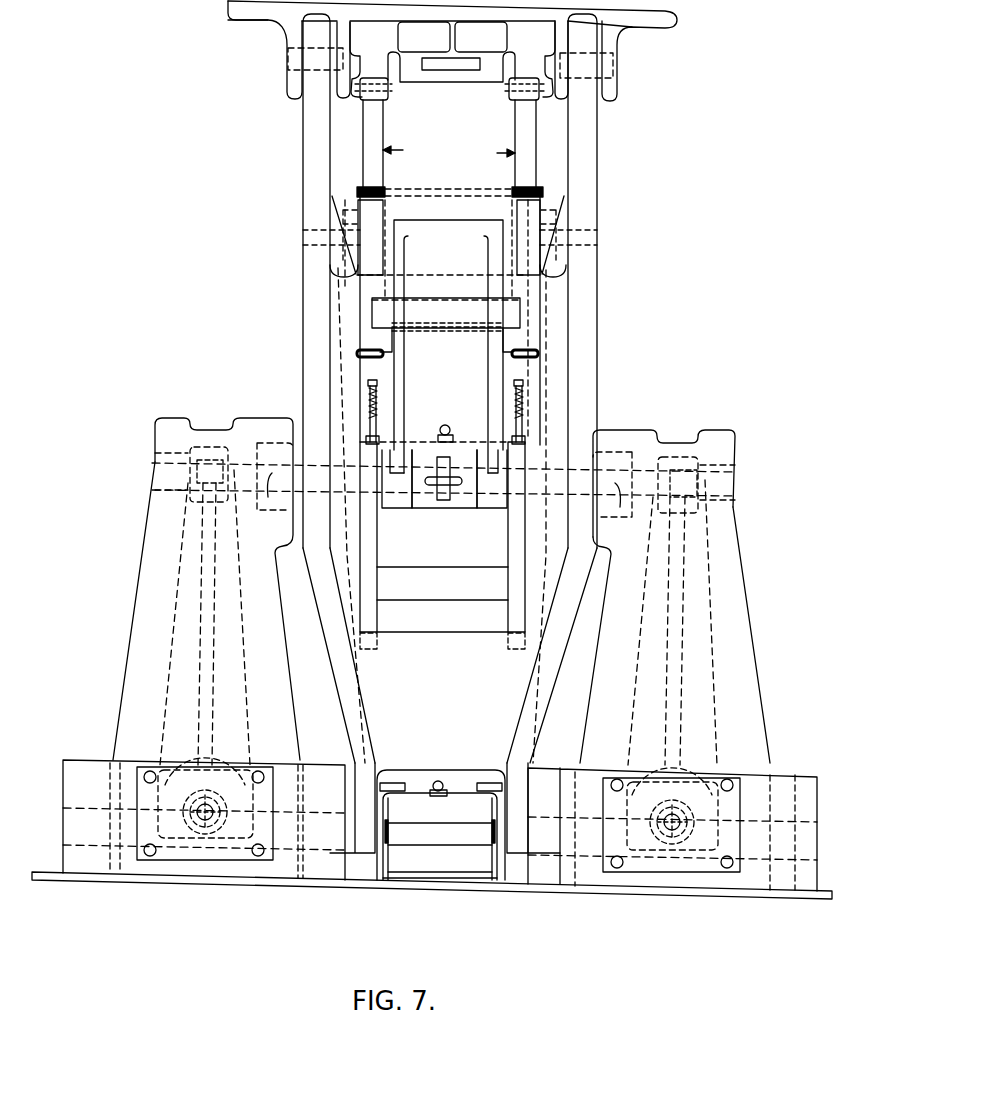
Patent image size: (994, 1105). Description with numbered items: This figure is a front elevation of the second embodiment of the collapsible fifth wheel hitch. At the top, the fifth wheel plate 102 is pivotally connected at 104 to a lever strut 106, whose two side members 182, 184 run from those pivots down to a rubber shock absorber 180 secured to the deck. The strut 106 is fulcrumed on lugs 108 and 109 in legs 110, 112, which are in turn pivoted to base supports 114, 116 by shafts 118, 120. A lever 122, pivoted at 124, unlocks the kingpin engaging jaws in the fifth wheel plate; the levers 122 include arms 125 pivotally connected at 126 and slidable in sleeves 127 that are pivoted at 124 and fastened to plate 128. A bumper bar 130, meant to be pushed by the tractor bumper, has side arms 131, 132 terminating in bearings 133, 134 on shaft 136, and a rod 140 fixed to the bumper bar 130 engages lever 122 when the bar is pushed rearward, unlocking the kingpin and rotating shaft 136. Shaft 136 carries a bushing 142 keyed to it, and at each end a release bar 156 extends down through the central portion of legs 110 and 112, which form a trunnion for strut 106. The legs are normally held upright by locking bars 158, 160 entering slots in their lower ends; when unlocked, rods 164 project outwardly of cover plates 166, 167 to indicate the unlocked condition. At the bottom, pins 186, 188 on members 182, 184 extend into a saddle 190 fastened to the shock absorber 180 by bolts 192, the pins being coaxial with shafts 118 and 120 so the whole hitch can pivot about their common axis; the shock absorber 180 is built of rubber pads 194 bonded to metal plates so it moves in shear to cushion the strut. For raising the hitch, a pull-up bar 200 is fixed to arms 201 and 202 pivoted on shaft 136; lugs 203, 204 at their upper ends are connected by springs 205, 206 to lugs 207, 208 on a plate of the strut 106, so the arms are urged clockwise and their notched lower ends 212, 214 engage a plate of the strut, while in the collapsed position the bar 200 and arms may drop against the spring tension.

The fifth wheel plate 102 is at (680, 20).
The pivotal connection 104 is at (615, 66).
The lever strut 106 is at (590, 182).
The lug 108 is at (283, 443).
The lug 109 is at (607, 450).
The leg 110 is at (163, 422).
The leg 112 is at (720, 437).
The base support 114 is at (75, 760).
The base support 116 is at (797, 787).
The shaft 118 is at (83, 808).
The shaft 120 is at (783, 822).
The lever 122 is at (449, 154).
The pivot 124 is at (310, 233).
The arm 125 is at (380, 137).
The pivotal connection 126 is at (391, 90).
The sleeve 127 is at (356, 196).
The plate 128 is at (422, 193).
The bumper bar 130 is at (465, 248).
The side arm 131 is at (405, 347).
The side arm 132 is at (485, 353).
The bearing 133 is at (395, 508).
The bearing 134 is at (492, 508).
The shaft 136 is at (563, 520).
The rod 140 is at (427, 304).
The bushing 142 is at (445, 508).
The release bar 156 is at (682, 632).
The locking bar 158 is at (230, 840).
The locking bar 160 is at (695, 852).
The rod portion 164 is at (203, 820).
The cover plate 166 is at (133, 832).
The cover plate 167 is at (733, 872).
The rubber shock absorber 180 is at (462, 868).
The side member 182 is at (300, 320).
The side member 184 is at (597, 320).
The pin 186 is at (393, 833).
The pin 188 is at (487, 847).
The saddle 190 is at (460, 798).
The bolt 192 is at (438, 779).
The rubber pad 194 is at (460, 821).
The pull-up bar 200 is at (460, 600).
The arm 201 is at (378, 553).
The arm 202 is at (510, 552).
The lug 203 is at (378, 432).
The lug 204 is at (513, 420).
The spring 205 is at (368, 403).
The spring 206 is at (525, 403).
The lug 207 is at (370, 382).
The lug 208 is at (520, 382).
The notched lower end 212 is at (377, 642).
The notched lower end 214 is at (507, 648).